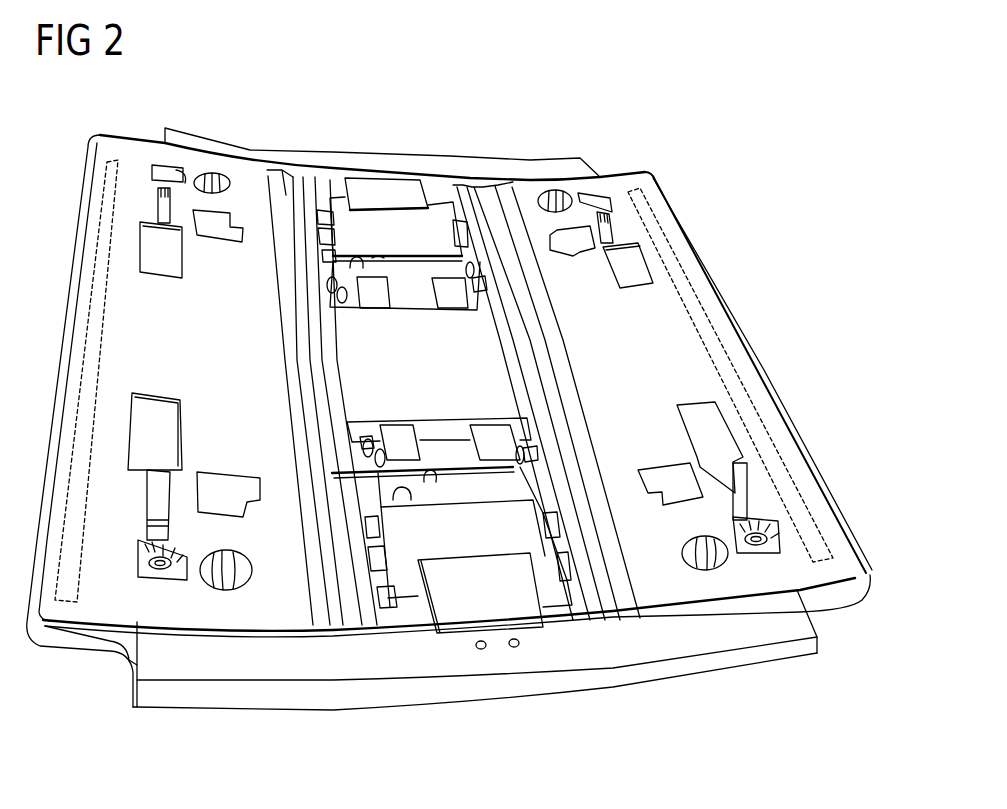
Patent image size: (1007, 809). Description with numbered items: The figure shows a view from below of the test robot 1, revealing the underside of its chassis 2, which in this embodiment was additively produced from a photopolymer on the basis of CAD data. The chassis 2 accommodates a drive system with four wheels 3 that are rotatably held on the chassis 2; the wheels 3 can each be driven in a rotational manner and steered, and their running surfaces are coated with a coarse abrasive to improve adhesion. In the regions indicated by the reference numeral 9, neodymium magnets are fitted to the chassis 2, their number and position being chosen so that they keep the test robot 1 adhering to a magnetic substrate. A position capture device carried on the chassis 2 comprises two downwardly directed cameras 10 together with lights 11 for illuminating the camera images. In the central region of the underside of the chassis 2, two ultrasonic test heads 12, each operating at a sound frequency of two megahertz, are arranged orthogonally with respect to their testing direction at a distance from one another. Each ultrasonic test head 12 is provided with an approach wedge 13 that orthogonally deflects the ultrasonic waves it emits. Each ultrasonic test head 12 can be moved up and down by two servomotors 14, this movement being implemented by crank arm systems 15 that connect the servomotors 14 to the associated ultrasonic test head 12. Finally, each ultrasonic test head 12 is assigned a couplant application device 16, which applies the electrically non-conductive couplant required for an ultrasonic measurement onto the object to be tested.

The test robot 1 is at (718, 218).
The chassis 2 is at (342, 663).
The wheels 3 is at (213, 173).
The regions for magnets 9 is at (83, 423).
The cameras 10 is at (357, 260).
The lights 11 is at (380, 255).
The ultrasonic test heads 12 is at (442, 215).
The approach wedge 13 is at (375, 190).
The servomotors 14 is at (370, 297).
The crank arm systems 15 is at (332, 275).
The couplant application device 16 is at (513, 648).